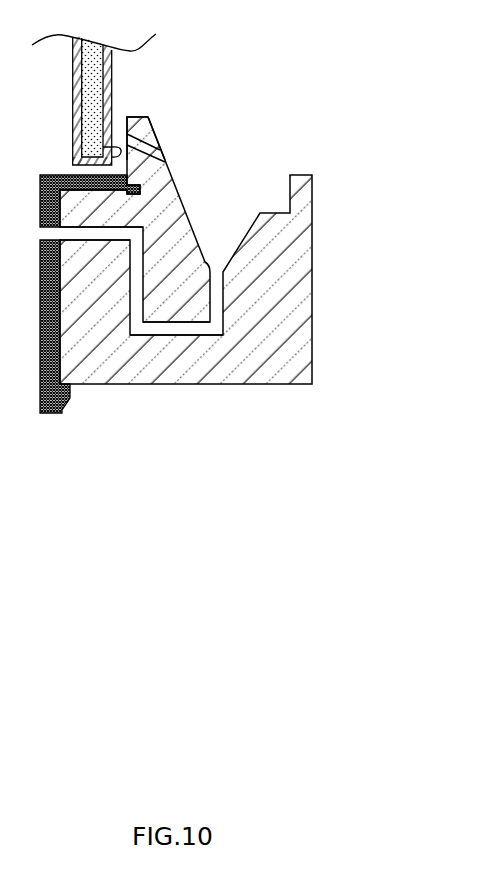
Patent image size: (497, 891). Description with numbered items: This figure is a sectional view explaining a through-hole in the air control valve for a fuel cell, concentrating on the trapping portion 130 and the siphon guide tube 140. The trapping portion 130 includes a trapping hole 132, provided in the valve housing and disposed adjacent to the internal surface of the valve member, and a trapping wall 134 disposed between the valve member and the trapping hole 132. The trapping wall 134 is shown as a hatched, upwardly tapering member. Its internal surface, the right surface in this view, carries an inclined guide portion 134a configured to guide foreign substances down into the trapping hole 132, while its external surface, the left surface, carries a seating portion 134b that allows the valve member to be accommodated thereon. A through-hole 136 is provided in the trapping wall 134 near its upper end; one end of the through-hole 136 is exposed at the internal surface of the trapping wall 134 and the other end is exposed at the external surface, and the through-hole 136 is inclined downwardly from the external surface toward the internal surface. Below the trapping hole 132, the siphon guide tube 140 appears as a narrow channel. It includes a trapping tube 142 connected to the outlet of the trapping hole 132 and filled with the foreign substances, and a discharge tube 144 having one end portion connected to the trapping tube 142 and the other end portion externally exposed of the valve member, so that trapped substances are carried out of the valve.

The trapping portion 130 is at (258, 207).
The trapping hole 132 is at (242, 246).
The trapping wall 134 is at (158, 172).
The inclined guide portion 134a is at (157, 132).
The seating portion 134b is at (126, 119).
The through-hole 136 is at (165, 153).
The siphon guide tube 140 is at (141, 356).
The trapping tube 142 is at (182, 336).
The discharge tube 144 is at (93, 240).